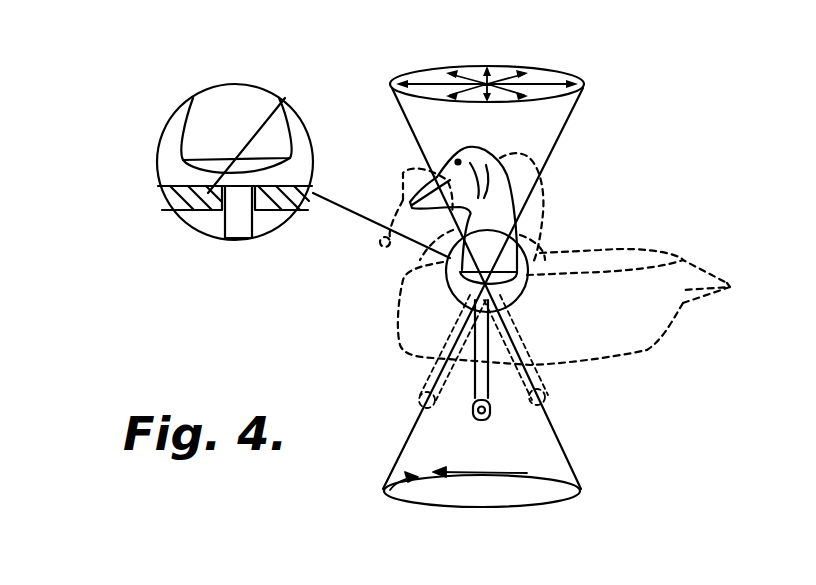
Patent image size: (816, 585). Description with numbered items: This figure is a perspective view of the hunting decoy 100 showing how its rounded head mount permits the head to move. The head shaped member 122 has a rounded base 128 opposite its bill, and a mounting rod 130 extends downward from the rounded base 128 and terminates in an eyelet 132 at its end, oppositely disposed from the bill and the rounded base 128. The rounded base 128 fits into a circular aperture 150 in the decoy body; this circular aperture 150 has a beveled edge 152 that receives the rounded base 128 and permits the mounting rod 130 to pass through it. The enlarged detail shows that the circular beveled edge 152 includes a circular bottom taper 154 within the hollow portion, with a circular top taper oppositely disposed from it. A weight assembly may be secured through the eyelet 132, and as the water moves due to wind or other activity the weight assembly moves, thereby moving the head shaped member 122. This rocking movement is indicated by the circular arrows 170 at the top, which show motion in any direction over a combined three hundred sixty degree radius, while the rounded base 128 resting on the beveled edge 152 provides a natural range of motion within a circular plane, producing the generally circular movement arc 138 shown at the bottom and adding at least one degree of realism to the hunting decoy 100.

The hunting decoy 100 is at (628, 226).
The head shaped member 122 is at (508, 177).
The rounded base 128 is at (160, 181).
The mounting rod 130 is at (247, 223).
The eyelet 132 is at (490, 417).
The generally circular movement arc 138 is at (580, 493).
The circular aperture 150 is at (205, 243).
The beveled edge 152 is at (287, 107).
The circular bottom taper 154 is at (217, 213).
The circular arrows 170 is at (478, 78).